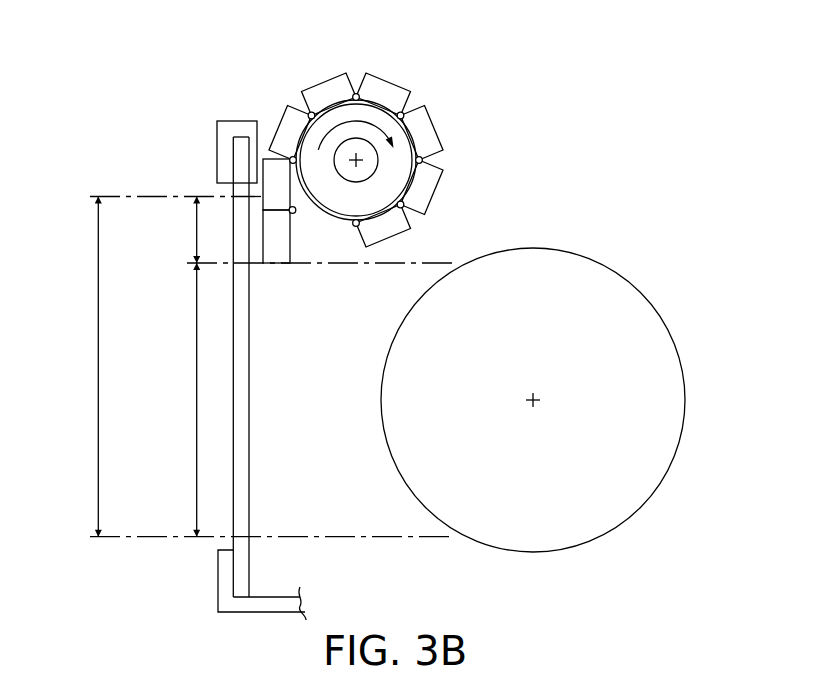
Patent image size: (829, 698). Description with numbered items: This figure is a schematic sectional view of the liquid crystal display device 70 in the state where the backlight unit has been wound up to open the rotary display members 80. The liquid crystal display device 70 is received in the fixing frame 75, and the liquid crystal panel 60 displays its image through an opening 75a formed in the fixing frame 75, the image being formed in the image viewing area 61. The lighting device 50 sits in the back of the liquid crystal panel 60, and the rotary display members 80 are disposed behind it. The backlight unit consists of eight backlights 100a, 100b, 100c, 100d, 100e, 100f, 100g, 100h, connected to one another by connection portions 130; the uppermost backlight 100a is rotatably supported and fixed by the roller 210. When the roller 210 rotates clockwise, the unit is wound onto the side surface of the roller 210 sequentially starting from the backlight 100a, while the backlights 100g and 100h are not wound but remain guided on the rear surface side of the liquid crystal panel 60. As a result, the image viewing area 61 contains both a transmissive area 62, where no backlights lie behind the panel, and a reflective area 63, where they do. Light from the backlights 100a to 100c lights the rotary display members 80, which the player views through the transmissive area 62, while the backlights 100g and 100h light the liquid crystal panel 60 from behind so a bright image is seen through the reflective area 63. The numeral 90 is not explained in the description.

The lighting device 50 is at (436, 70).
The liquid crystal panel 60 is at (241, 468).
The image viewing area 61 is at (97, 370).
The transmissive area 62 is at (196, 405).
The reflective area 63 is at (195, 233).
The liquid crystal display device 70 is at (183, 72).
The fixing frame 75 is at (233, 120).
The opening 75a is at (222, 189).
The rotary display members 80 is at (686, 398).
The apparatus 90 is at (534, 63).
The backlight 100a is at (390, 241).
The backlight 100b is at (437, 193).
The backlight 100c is at (441, 127).
The backlight 100d is at (392, 76).
The backlight 100e is at (318, 76).
The backlight 100f is at (265, 147).
The backlight 100g is at (261, 178).
The backlight 100h is at (279, 263).
The connection portions 130 is at (296, 213).
The roller 210 is at (345, 202).